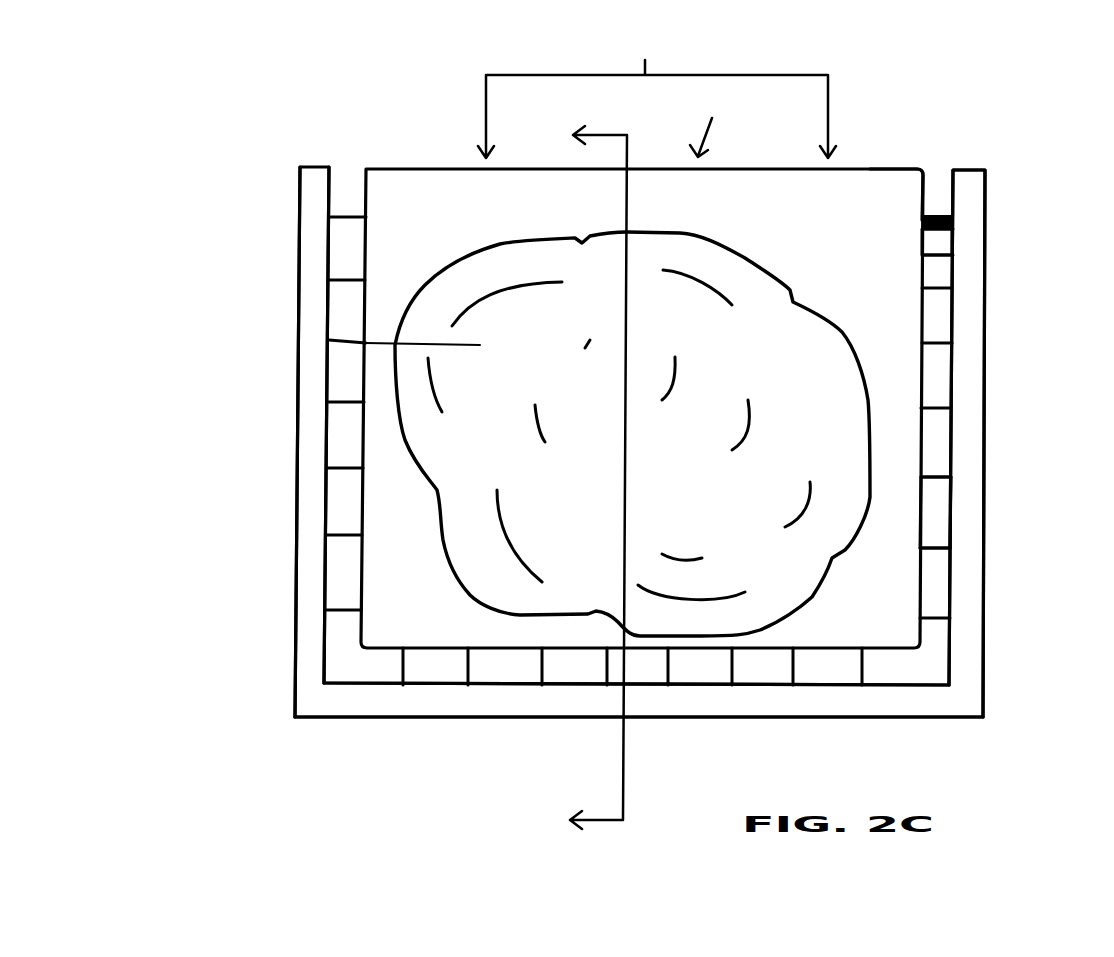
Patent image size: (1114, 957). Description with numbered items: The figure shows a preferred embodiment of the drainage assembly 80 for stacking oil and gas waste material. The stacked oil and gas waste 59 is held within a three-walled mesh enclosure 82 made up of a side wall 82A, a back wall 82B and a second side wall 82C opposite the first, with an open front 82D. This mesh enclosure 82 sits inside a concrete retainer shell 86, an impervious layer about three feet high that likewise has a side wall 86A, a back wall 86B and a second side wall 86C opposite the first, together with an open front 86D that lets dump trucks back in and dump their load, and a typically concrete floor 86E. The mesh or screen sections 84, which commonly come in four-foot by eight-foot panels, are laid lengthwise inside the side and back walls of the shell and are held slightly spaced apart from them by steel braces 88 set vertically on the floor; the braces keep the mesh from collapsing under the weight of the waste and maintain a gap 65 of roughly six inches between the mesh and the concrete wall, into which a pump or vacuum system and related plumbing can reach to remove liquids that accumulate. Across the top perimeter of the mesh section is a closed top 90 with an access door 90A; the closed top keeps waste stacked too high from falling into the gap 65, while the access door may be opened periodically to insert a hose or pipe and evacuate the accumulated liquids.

The drainage assembly 80 is at (265, 185).
The mesh or screen sections 84 is at (374, 225).
The concrete retainer shell 86 is at (256, 529).
The side wall 86A is at (993, 385).
The back wall 86B is at (358, 727).
The second side wall 86C is at (300, 270).
The open front 86D is at (708, 124).
The floor 86E is at (855, 193).
The steel braces 88 is at (337, 340).
The closed top 90 is at (950, 220).
The access door 90A is at (942, 262).
The gap 65 is at (940, 518).
The three-walled mesh enclosure 82 is at (365, 628).
The side wall 82A is at (920, 430).
The back wall 82B is at (525, 645).
The second side wall 82C is at (445, 346).
The open front 82D is at (657, 98).
The stacked oil and gas waste 59 is at (703, 473).